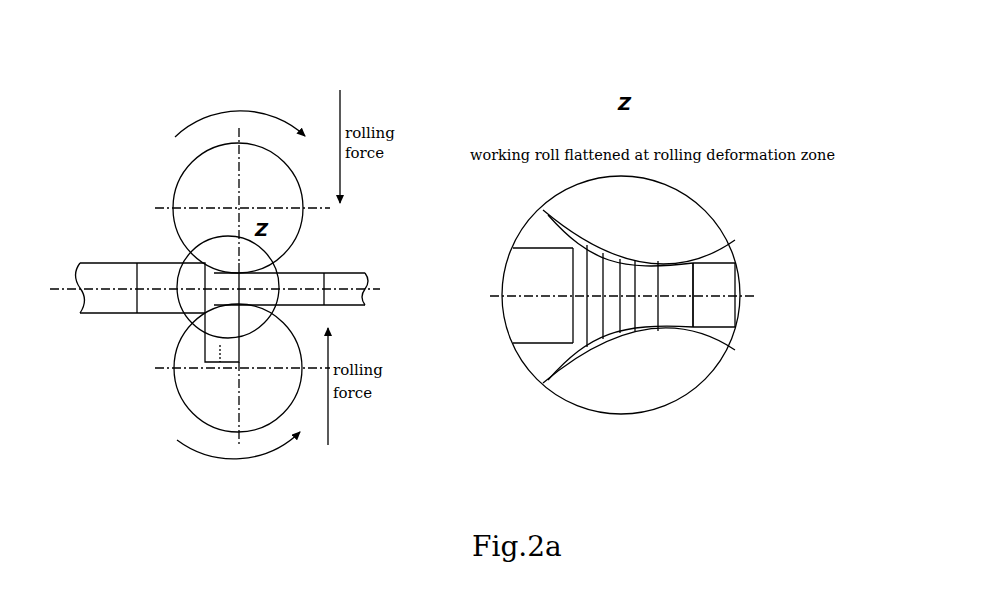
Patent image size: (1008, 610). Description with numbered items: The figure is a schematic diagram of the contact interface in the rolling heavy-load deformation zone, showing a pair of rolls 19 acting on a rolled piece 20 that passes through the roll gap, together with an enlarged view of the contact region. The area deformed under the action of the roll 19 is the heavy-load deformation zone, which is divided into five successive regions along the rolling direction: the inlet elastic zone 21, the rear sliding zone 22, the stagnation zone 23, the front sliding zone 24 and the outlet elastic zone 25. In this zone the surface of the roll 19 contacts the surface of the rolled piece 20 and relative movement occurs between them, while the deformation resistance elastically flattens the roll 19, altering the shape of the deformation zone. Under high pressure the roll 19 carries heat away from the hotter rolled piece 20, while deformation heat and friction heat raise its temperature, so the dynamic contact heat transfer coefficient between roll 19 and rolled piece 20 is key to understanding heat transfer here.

The roll 19 is at (286, 270).
The rolled piece 20 is at (237, 289).
The inlet elastic zone 21 is at (527, 360).
The rear sliding zone 22 is at (560, 364).
The stagnation zone 23 is at (610, 367).
The front sliding zone 24 is at (682, 368).
The outlet elastic zone 25 is at (727, 369).